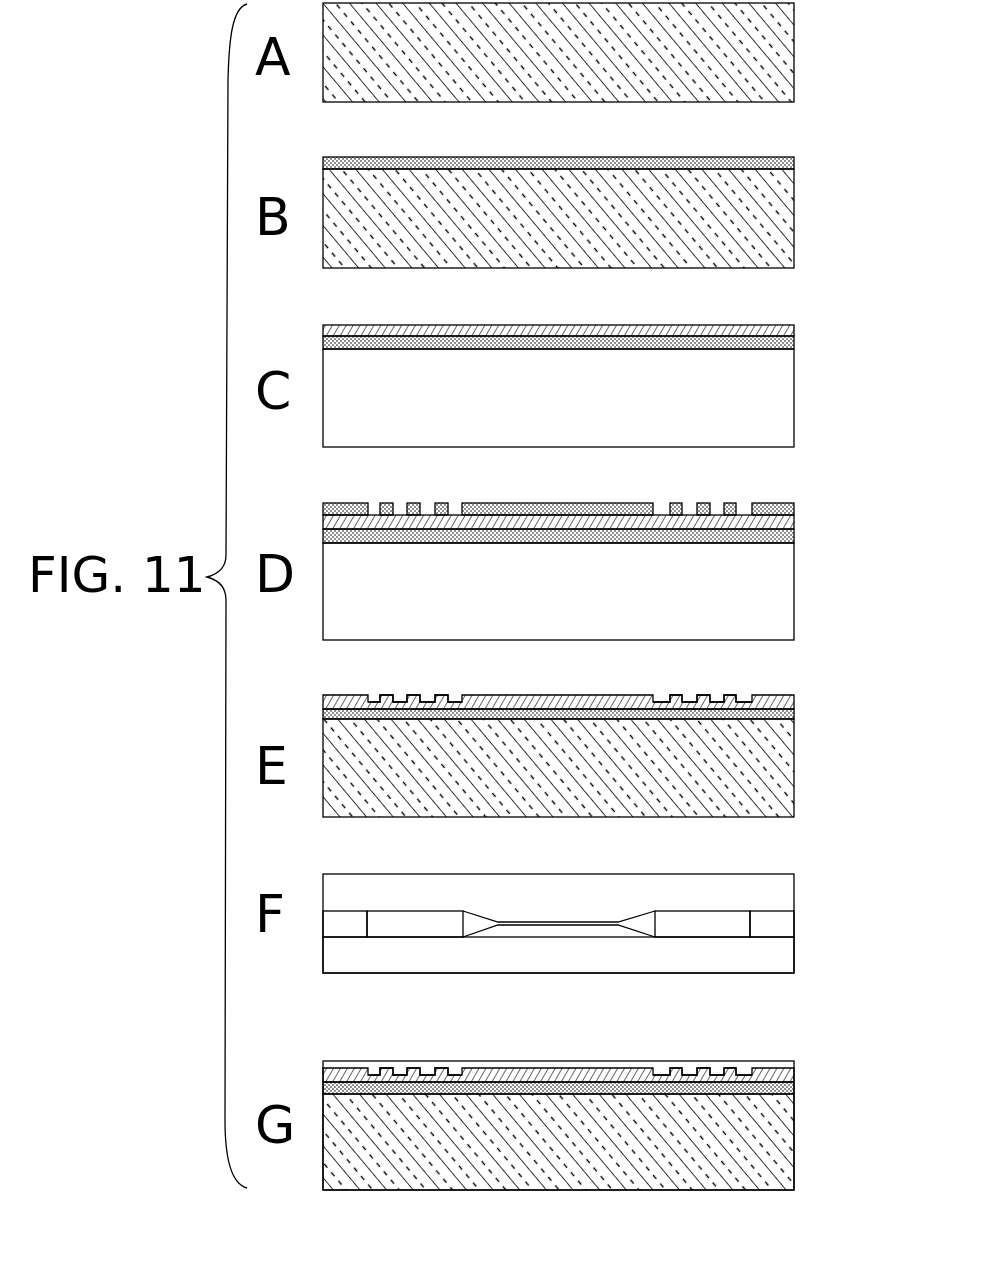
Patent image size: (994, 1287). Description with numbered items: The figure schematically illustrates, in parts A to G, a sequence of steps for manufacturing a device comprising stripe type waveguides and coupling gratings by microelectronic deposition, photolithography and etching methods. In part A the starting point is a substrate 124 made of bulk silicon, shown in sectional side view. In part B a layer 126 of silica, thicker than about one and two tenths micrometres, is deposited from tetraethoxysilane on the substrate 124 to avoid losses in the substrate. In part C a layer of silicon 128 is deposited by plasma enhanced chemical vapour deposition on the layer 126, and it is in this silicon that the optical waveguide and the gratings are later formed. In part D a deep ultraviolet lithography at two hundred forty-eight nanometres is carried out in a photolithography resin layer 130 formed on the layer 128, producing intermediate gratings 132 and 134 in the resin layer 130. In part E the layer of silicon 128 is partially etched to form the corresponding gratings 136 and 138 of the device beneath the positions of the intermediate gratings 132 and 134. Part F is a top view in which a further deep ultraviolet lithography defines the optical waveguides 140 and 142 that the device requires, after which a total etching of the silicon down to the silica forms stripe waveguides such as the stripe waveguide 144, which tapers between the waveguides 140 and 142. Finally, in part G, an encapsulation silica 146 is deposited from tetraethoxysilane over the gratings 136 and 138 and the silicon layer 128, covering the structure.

The substrate 124 is at (782, 58).
The layer of silica 126 is at (782, 163).
The layer of silicon 128 is at (794, 331).
The photolithography resin layer 130 is at (794, 508).
The intermediate grating 132 is at (413, 500).
The intermediate grating 134 is at (707, 497).
The grating 136 is at (412, 693).
The grating 138 is at (707, 693).
The optical waveguide 140 is at (343, 925).
The optical waveguide 142 is at (788, 922).
The stripe waveguide 144 is at (567, 921).
The encapsulation silica 146 is at (794, 1062).